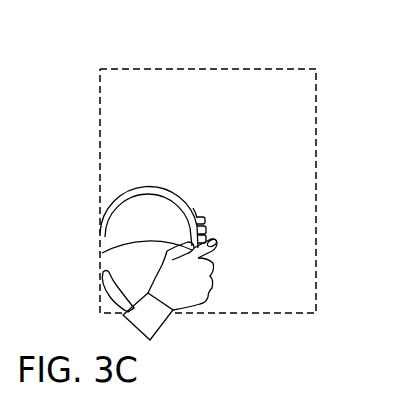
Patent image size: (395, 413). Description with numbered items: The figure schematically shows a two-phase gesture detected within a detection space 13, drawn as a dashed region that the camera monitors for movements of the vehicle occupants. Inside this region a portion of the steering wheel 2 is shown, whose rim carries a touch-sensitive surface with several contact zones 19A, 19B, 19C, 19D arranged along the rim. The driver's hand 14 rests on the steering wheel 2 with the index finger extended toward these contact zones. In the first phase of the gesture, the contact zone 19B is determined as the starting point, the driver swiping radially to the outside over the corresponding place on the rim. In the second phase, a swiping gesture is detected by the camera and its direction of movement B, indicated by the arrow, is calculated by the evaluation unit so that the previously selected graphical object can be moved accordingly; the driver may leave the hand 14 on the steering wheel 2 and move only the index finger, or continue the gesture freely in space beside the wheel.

The detection space 13 is at (284, 54).
The steering wheel 2 is at (130, 200).
The contact zone 19A is at (195, 212).
The contact zone 19B is at (200, 220).
The direction of movement B is at (202, 221).
The contact zone 19C is at (204, 229).
The contact zone 19D is at (203, 238).
The hand 14 is at (184, 283).